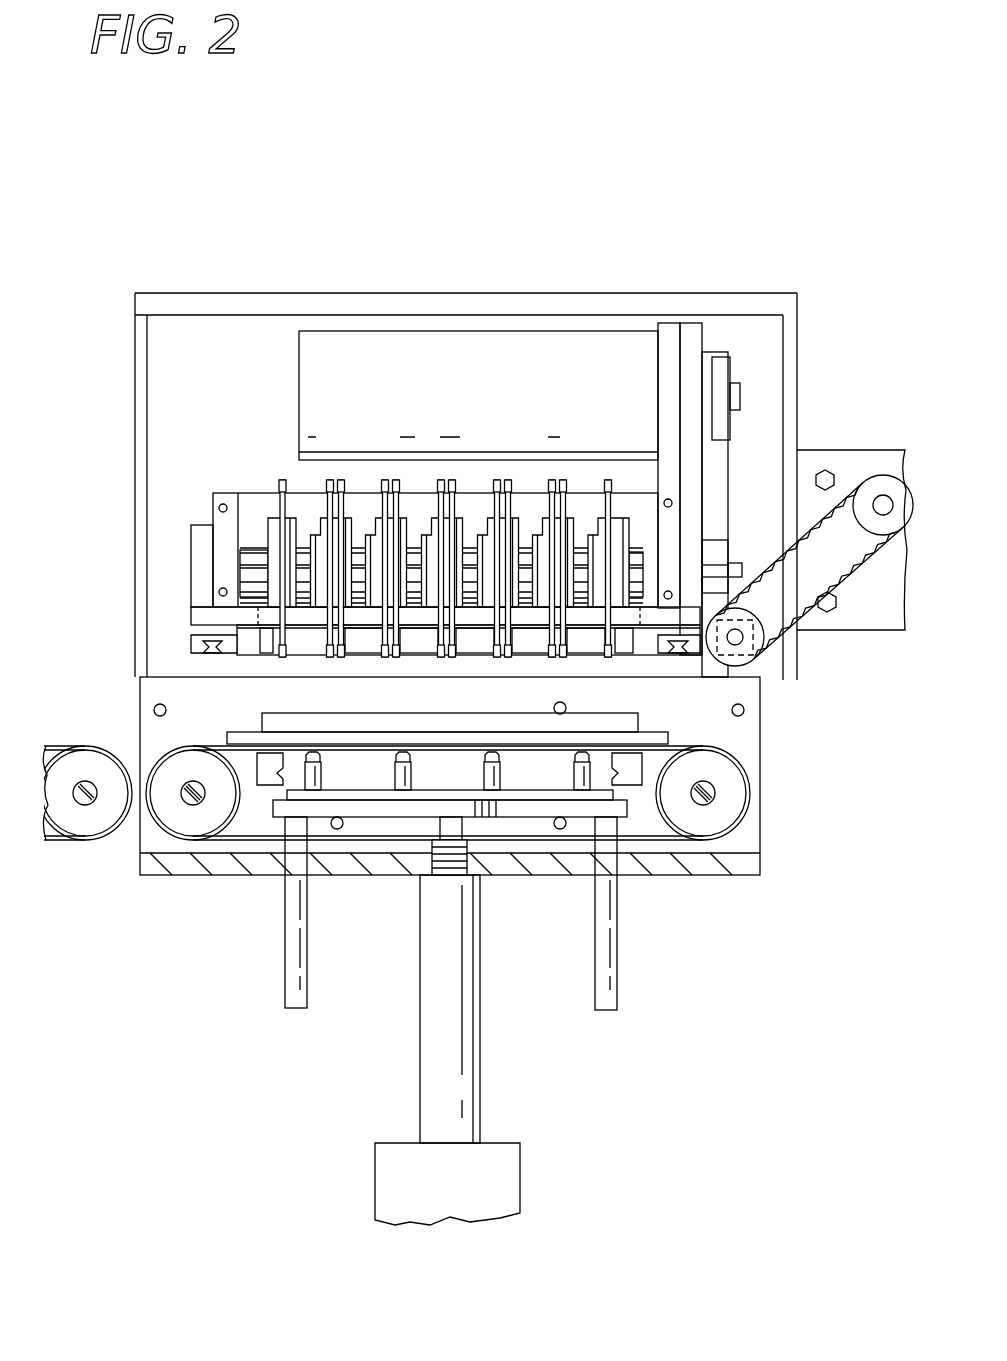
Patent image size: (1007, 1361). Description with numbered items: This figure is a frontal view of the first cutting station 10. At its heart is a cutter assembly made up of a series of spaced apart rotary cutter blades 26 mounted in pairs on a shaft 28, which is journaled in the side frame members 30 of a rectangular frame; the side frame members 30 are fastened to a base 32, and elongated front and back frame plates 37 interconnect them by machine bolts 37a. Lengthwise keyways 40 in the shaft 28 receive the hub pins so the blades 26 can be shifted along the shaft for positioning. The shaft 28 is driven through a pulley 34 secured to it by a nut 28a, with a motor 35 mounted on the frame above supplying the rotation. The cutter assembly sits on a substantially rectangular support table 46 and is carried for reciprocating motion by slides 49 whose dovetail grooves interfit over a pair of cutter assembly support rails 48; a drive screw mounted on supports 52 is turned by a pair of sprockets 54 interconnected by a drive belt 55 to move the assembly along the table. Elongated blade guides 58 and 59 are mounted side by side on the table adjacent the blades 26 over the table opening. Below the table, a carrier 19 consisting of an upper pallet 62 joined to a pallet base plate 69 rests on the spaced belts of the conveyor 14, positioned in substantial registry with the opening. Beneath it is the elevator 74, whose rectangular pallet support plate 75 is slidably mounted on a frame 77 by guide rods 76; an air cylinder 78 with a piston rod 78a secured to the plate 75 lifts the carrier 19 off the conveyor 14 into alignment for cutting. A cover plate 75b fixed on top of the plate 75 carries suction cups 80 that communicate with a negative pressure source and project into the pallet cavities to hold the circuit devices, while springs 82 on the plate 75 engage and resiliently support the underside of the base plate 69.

The first cutting station 10 is at (124, 522).
The conveyor 14 is at (162, 838).
The carrier 19 is at (684, 734).
The rotary cutter blades 26 is at (380, 492).
The shaft 28 is at (472, 525).
The nut 28a is at (772, 610).
The side frame members 30 is at (215, 540).
The base 32 is at (205, 622).
The pulley 34 is at (728, 545).
The motor 35 is at (380, 338).
The front and back frame plates 37 is at (418, 505).
The machine bolts 37a is at (223, 492).
The keyways 40 is at (643, 573).
The support table 46 is at (242, 665).
The cutter assembly support rails 48 is at (203, 660).
The slides 49 is at (200, 650).
The supports 52 is at (772, 645).
The sprockets 54 is at (882, 478).
The drive belt 55 is at (867, 555).
The blade guide 58 is at (318, 648).
The blade guide 59 is at (273, 653).
The pallet 62 is at (463, 723).
The pallet base plate 69 is at (228, 738).
The elevator 74 is at (418, 810).
The pallet support plate 75 is at (273, 792).
The cover plate 75b is at (516, 797).
The guide rods 76 is at (285, 945).
The frame 77 is at (760, 840).
The air cylinder 78 is at (370, 1187).
The piston rod 78a is at (458, 1073).
The suction cups 80 is at (320, 776).
The springs 82 is at (278, 780).